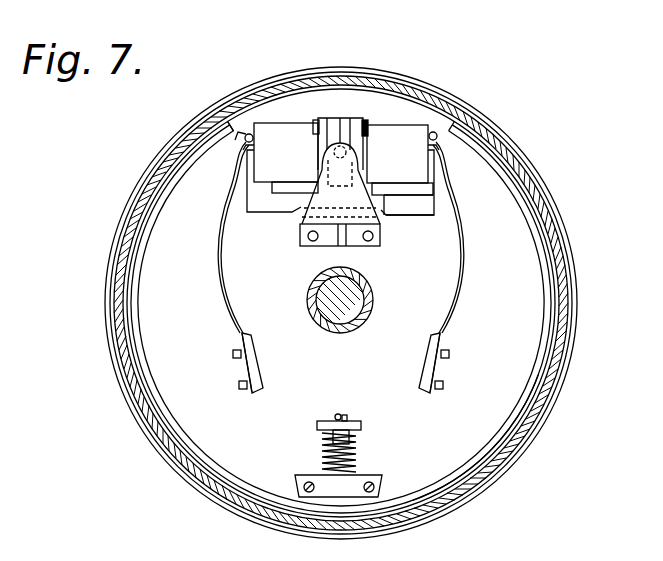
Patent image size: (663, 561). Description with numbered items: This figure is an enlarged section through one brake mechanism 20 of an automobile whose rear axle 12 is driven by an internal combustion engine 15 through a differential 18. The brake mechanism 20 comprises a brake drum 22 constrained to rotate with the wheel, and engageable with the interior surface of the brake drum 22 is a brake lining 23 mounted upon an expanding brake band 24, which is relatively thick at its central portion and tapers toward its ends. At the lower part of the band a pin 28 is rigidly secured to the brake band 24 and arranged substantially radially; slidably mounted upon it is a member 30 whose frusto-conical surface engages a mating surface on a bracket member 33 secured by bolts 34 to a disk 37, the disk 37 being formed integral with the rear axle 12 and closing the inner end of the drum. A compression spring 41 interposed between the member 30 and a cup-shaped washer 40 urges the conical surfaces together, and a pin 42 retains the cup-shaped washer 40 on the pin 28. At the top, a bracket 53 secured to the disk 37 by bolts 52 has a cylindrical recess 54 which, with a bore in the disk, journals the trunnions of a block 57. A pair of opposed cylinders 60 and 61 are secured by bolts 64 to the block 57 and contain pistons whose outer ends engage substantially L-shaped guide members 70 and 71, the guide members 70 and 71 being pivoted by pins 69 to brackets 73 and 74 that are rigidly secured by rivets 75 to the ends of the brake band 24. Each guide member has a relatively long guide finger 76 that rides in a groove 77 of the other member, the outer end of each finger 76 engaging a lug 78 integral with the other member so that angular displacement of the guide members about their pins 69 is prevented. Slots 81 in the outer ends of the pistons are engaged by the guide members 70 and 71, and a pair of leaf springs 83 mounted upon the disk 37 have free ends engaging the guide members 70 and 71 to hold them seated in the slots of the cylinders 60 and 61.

The rear axle 12 is at (360, 324).
The internal combustion engine 15 is at (226, 136).
The differential 18 is at (463, 150).
The brake mechanism 20 is at (498, 114).
The brake drum 22 is at (558, 228).
The brake lining 23 is at (551, 263).
The brake band 24 is at (545, 280).
The pin 28 is at (347, 417).
The member 30 is at (330, 456).
The bracket member 33 is at (318, 480).
The bolts 34 is at (364, 488).
The disk 37 is at (482, 396).
The cup-shaped washer 40 is at (320, 424).
The compression spring 41 is at (352, 437).
The pin 42 is at (338, 414).
The bolts 52 is at (367, 242).
The bracket 53 is at (380, 244).
The cylindrical recess 54 is at (321, 160).
The block 57 is at (340, 135).
The cylinder 60 is at (314, 120).
The cylinder 61 is at (382, 121).
The bolts 64 is at (317, 129).
The pins 69 is at (250, 143).
The guide member 70 is at (256, 189).
The guide member 71 is at (432, 188).
The bracket 73 is at (247, 134).
The bracket 74 is at (439, 126).
The rivets 75 is at (384, 110).
The guide finger 76 is at (398, 203).
The groove 77 is at (422, 210).
The lug 78 is at (416, 226).
The slots 81 is at (234, 153).
The leaf springs 83 is at (219, 262).